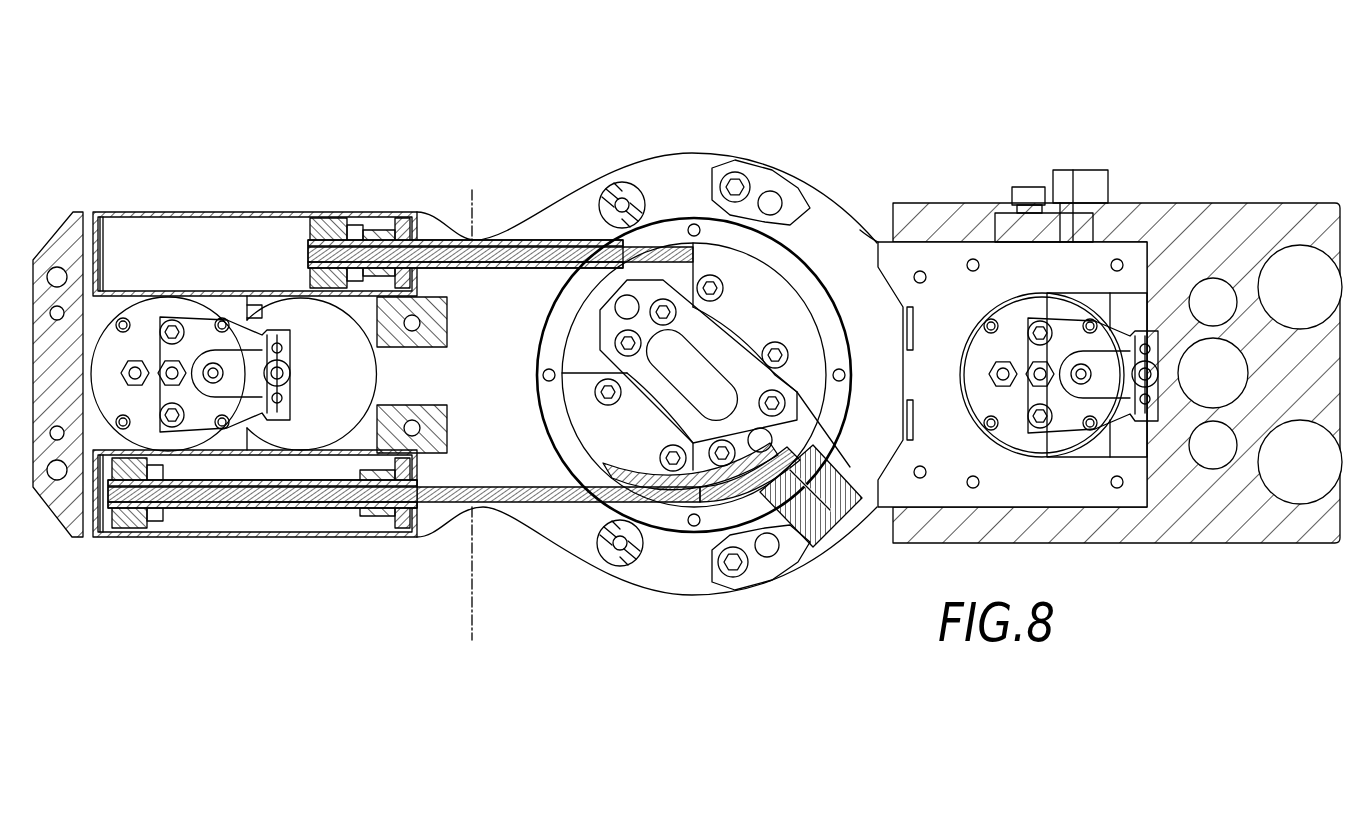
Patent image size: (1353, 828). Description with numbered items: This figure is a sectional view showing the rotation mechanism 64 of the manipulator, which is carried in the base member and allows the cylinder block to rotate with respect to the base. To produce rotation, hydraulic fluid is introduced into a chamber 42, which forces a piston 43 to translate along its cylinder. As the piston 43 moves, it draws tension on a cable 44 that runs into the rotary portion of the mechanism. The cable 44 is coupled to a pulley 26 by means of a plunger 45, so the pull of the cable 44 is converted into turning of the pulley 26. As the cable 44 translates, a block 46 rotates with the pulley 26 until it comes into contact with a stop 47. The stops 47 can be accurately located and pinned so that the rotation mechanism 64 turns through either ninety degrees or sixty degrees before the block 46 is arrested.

The pulley 26 is at (772, 288).
The chamber 42 is at (348, 213).
The piston 43 is at (310, 222).
The cable 44 is at (683, 247).
The plunger 45 is at (793, 513).
The block 46 is at (860, 510).
The stop 47 is at (788, 185).
The rotation mechanism 64 is at (510, 587).